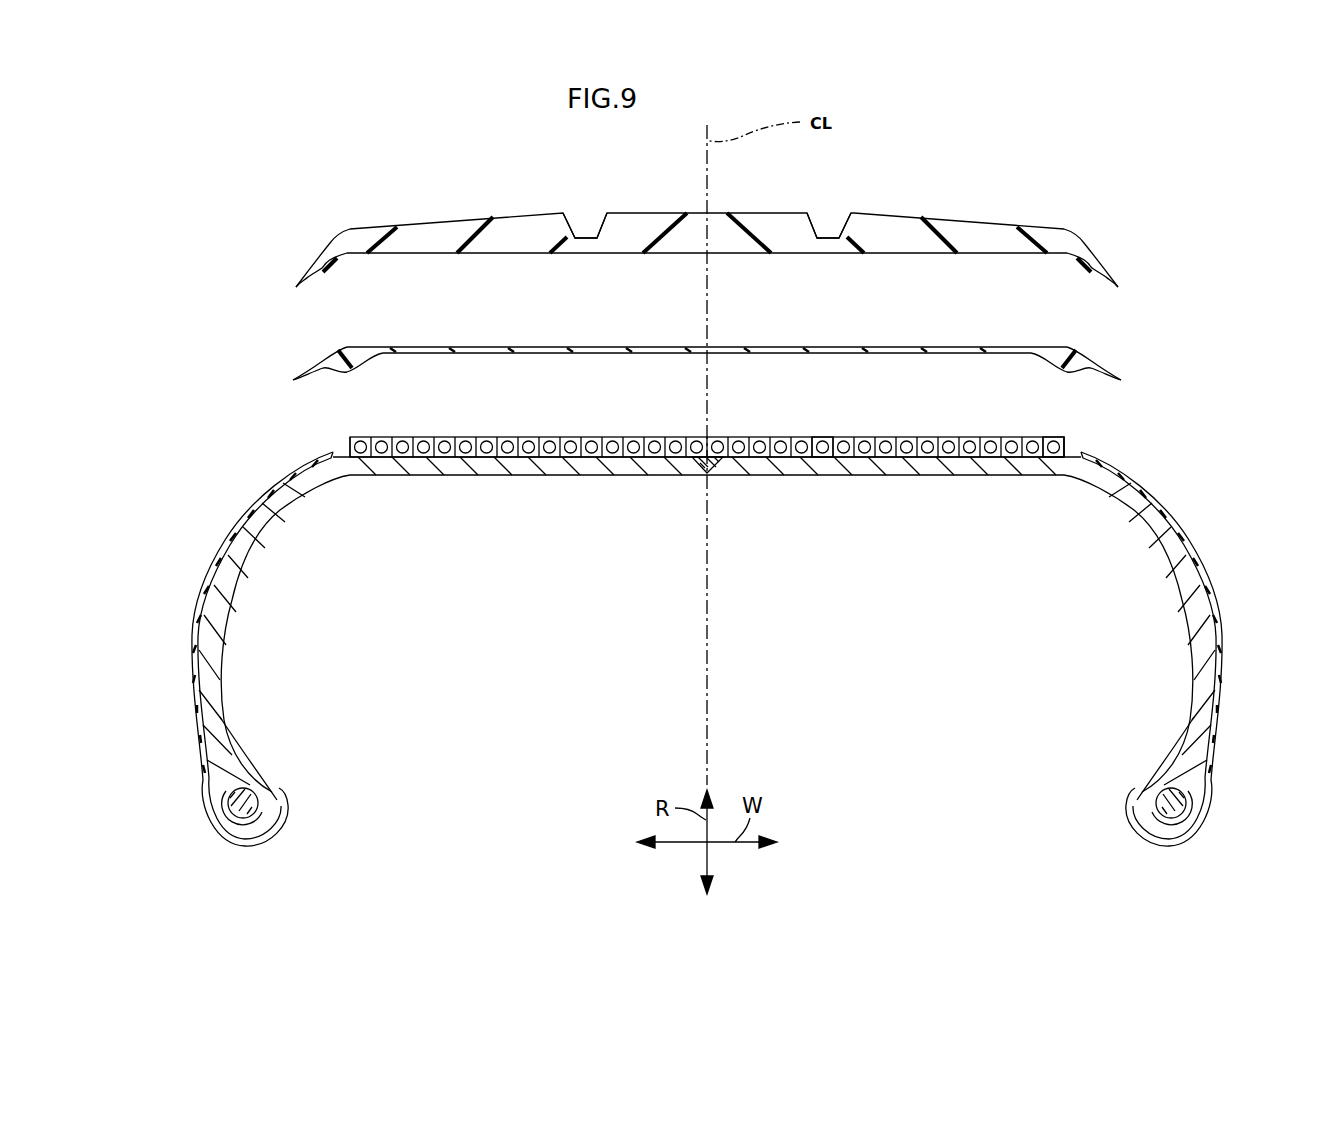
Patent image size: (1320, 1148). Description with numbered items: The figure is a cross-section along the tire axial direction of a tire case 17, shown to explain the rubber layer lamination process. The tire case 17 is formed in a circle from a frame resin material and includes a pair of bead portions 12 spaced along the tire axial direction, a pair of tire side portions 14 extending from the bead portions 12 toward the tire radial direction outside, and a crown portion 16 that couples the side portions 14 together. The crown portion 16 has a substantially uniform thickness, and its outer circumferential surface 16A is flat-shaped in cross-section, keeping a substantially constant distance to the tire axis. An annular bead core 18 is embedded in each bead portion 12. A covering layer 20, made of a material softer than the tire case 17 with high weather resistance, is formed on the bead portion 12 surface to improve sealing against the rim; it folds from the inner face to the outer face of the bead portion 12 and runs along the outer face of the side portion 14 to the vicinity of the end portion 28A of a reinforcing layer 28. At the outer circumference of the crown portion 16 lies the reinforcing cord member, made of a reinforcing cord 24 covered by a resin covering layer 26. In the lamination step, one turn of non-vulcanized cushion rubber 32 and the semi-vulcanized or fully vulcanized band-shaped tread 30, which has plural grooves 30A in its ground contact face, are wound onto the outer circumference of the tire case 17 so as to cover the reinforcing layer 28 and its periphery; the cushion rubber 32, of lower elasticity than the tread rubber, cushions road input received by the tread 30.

The bead portion 12 is at (255, 844).
The tire side portion 14 is at (192, 612).
The crown portion 16 is at (760, 441).
The outer circumferential surface 16A is at (821, 441).
The tire case 17 is at (236, 511).
The bead core 18 is at (250, 788).
The covering layer 20 is at (199, 679).
The reinforcing cord 24 is at (1048, 438).
The resin covering layer 26 is at (1061, 437).
The reinforcing layer 28 is at (912, 434).
The end portion 28A is at (348, 451).
The tread 30 is at (950, 221).
The groove 30A is at (597, 228).
The cushion rubber 32 is at (997, 347).